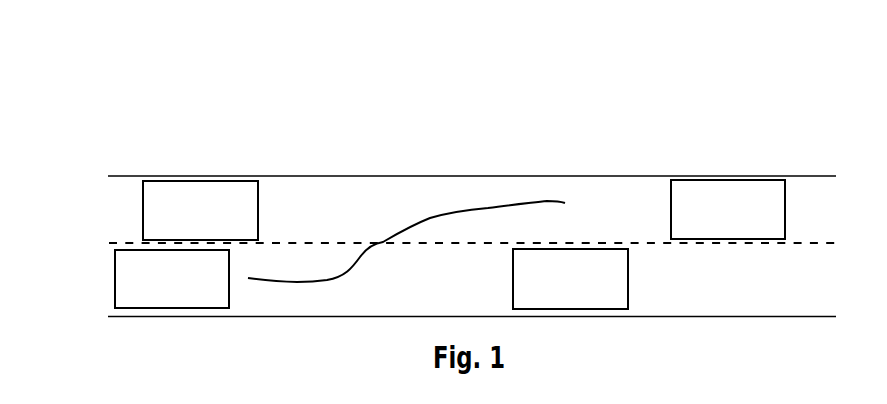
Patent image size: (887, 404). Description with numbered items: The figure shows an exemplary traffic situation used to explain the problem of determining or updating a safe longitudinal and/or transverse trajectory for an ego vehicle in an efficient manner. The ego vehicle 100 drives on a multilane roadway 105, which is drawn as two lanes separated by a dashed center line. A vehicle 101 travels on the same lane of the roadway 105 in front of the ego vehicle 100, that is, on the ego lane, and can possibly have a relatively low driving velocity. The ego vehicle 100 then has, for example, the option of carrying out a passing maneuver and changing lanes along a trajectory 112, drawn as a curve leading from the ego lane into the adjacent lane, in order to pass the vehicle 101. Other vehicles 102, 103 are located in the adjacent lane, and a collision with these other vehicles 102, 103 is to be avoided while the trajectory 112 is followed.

The ego vehicle 100 is at (112, 285).
The vehicle 101 is at (635, 272).
The other vehicle 102 is at (786, 208).
The other vehicle 103 is at (262, 202).
The multilane roadway 105 is at (125, 175).
The trajectory 112 is at (488, 208).